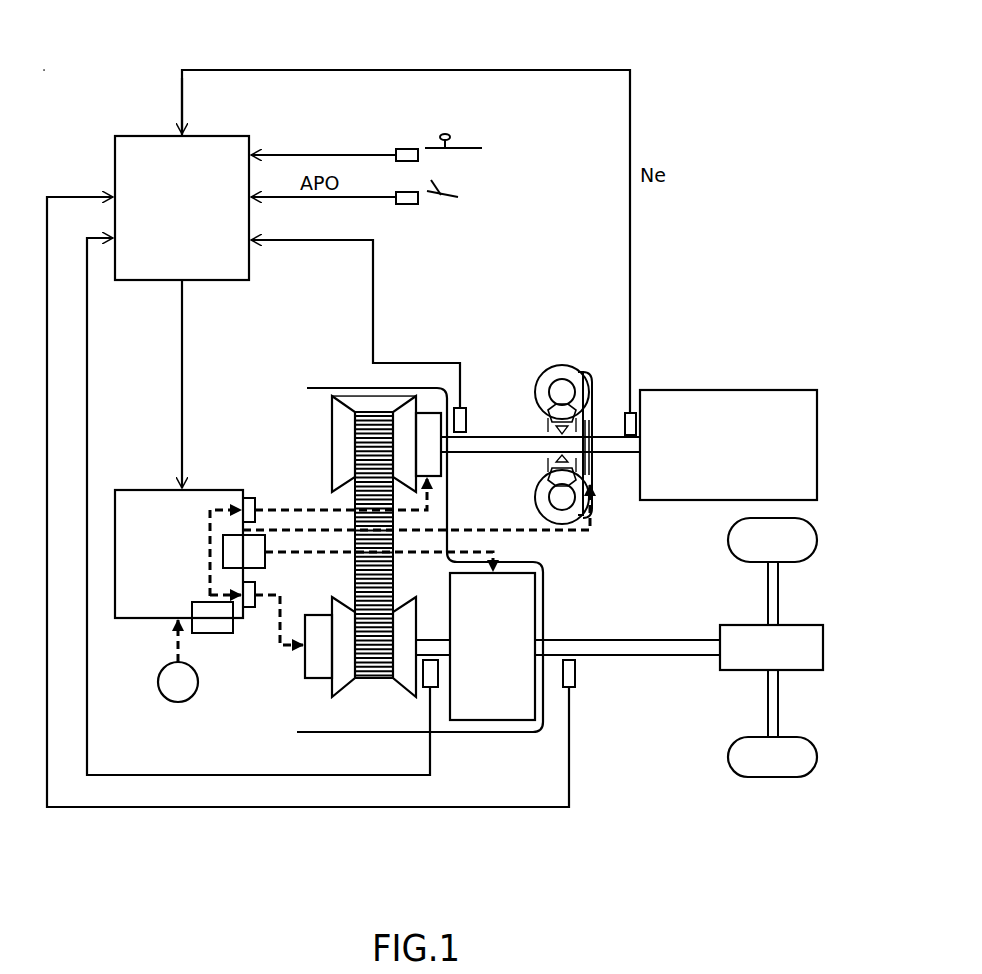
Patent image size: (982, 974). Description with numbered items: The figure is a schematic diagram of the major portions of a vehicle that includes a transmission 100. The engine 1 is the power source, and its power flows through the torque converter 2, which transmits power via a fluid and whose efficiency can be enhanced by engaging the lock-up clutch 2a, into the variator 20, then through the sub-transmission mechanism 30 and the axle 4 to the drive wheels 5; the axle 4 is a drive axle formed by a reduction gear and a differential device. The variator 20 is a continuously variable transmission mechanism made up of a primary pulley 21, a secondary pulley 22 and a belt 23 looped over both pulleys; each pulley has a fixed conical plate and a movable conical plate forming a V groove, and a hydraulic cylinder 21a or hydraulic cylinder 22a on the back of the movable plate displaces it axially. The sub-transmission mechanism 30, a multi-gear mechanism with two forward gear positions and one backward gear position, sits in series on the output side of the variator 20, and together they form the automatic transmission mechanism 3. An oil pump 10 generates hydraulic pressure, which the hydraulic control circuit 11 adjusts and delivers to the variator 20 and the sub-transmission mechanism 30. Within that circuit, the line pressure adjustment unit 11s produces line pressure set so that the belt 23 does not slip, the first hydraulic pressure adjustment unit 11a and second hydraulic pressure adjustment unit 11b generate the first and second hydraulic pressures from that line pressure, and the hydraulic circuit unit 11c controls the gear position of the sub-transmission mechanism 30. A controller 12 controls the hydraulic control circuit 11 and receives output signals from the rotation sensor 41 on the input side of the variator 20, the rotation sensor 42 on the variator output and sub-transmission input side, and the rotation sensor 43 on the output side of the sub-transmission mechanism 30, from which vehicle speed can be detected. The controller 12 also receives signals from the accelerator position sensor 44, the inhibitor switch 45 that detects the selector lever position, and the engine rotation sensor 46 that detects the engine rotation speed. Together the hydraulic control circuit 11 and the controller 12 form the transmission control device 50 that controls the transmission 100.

The transmission 100 is at (97, 92).
The engine 1 is at (808, 398).
The torque converter 2 is at (588, 372).
The lock-up clutch 2a is at (587, 464).
The automatic transmission mechanism 3 is at (345, 388).
The axle 4 is at (829, 647).
The drive wheels 5 is at (818, 540).
The oil pump 10 is at (158, 680).
The hydraulic control circuit 11 is at (207, 490).
The first hydraulic pressure adjustment unit 11a is at (250, 498).
The second hydraulic pressure adjustment unit 11b is at (249, 607).
The hydraulic circuit unit 11c is at (247, 560).
The line pressure adjustment unit 11s is at (213, 624).
The controller 12 is at (207, 282).
The variator 20 is at (320, 418).
The primary pulley 21 is at (345, 443).
The hydraulic cylinder 21a is at (428, 426).
The secondary pulley 22 is at (345, 663).
The hydraulic cylinder 22a is at (316, 668).
The belt 23 is at (375, 412).
The sub-transmission mechanism 30 is at (525, 605).
The rotation sensor 41 is at (460, 422).
The rotation sensor 42 is at (433, 687).
The rotation sensor 43 is at (578, 674).
The accelerator position sensor 44 is at (404, 204).
The inhibitor switch 45 is at (408, 149).
The engine rotation sensor 46 is at (628, 413).
The transmission control device 50 is at (215, 360).